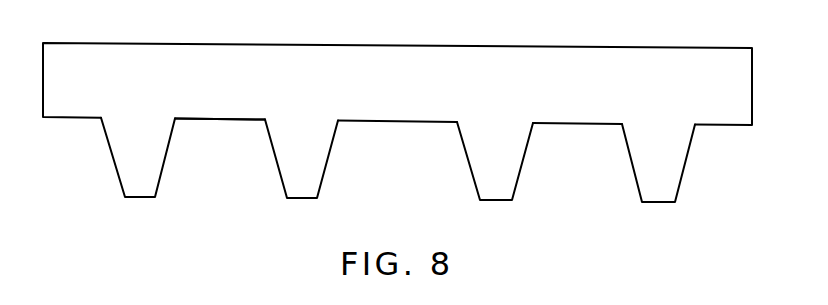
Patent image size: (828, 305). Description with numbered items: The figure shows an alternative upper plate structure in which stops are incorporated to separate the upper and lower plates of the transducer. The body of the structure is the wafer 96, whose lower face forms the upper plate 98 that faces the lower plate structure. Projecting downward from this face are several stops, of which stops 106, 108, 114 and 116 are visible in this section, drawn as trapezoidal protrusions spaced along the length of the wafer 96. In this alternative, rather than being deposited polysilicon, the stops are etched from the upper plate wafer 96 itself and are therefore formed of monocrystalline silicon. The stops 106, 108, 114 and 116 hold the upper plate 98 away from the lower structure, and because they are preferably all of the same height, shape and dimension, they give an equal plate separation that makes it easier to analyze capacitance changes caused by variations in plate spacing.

The wafer 96 is at (413, 91).
The upper plate 98 is at (205, 119).
The stop 106 is at (142, 188).
The stop 108 is at (303, 188).
The stop 114 is at (498, 192).
The stop 116 is at (662, 193).